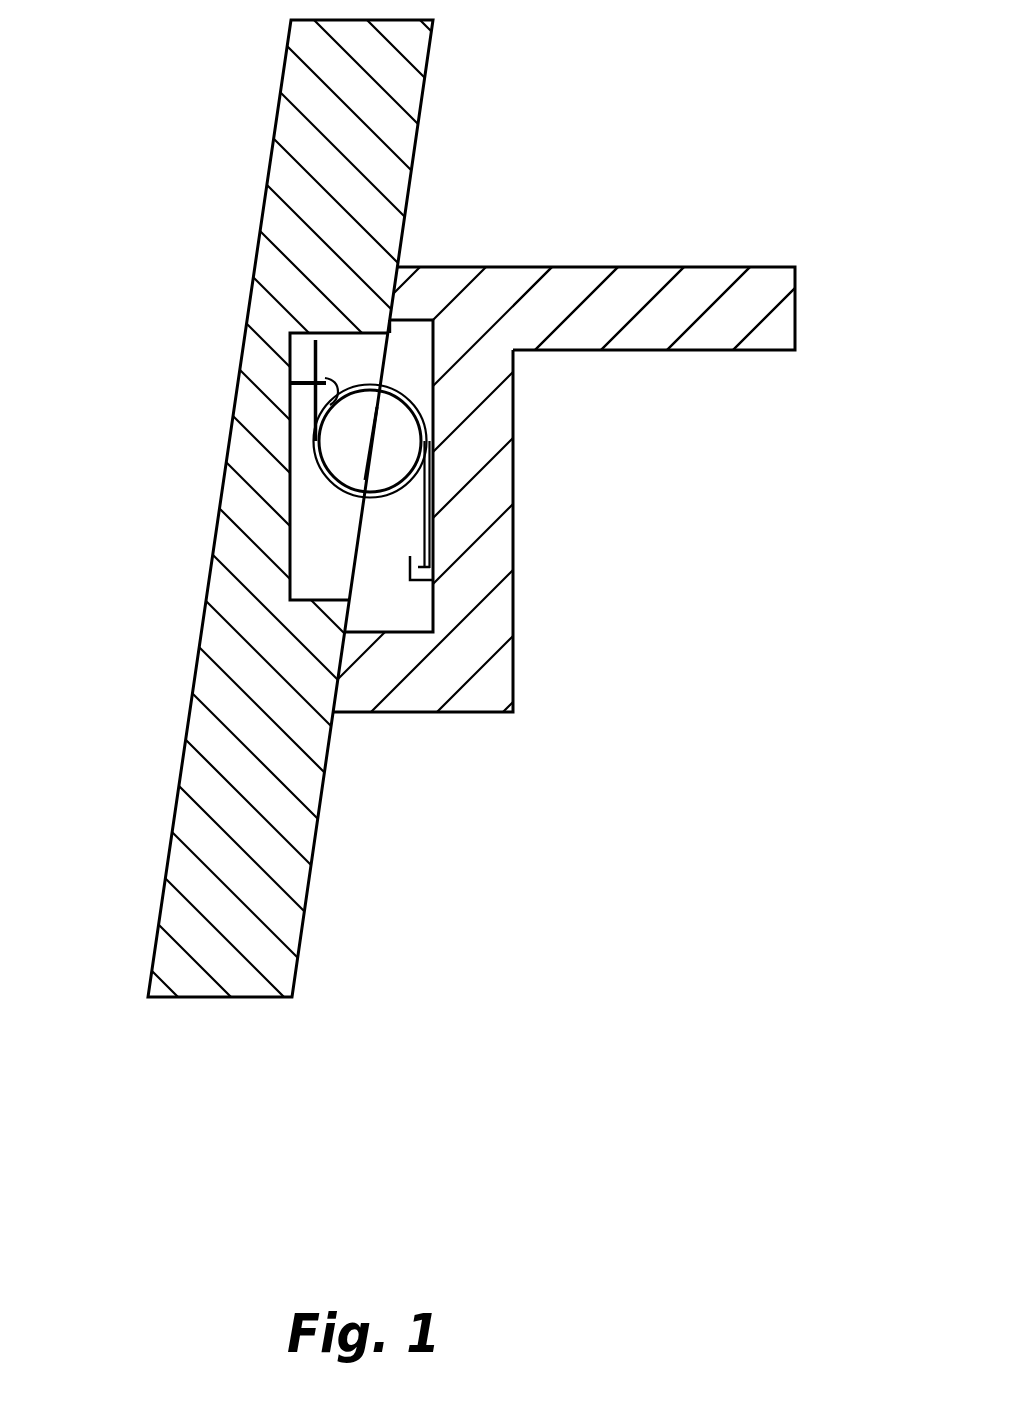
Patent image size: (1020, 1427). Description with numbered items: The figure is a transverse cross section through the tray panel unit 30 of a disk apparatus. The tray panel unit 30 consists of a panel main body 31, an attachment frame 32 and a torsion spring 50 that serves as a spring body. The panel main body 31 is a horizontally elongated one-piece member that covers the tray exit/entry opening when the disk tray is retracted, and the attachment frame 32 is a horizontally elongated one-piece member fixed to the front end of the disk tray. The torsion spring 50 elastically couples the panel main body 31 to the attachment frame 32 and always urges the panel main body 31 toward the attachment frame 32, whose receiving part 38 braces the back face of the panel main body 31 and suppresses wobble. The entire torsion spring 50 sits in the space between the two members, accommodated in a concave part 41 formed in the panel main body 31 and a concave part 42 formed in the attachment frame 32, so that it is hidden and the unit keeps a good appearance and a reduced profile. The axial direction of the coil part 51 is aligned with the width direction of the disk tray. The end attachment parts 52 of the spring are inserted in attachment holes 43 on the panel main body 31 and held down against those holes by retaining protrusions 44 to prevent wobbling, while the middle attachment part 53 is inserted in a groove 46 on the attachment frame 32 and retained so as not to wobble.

The tray panel unit 30 is at (510, 713).
The panel main body 31 is at (183, 755).
The attachment frame 32 is at (673, 267).
The receiving part 38 is at (436, 267).
The concave part 41 is at (300, 508).
The concave part 42 is at (415, 370).
The attachment hole 43 is at (312, 335).
The retaining protrusion 44 is at (320, 398).
The groove 46 is at (430, 580).
The torsion spring 50 is at (322, 520).
The coil part 51 is at (430, 500).
The end attachment part 52 is at (313, 355).
The middle attachment part 53 is at (420, 530).